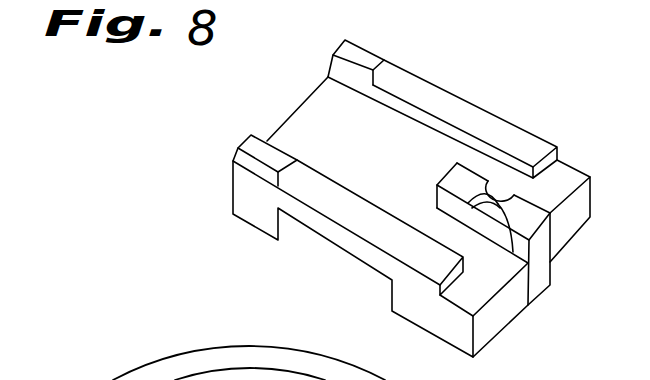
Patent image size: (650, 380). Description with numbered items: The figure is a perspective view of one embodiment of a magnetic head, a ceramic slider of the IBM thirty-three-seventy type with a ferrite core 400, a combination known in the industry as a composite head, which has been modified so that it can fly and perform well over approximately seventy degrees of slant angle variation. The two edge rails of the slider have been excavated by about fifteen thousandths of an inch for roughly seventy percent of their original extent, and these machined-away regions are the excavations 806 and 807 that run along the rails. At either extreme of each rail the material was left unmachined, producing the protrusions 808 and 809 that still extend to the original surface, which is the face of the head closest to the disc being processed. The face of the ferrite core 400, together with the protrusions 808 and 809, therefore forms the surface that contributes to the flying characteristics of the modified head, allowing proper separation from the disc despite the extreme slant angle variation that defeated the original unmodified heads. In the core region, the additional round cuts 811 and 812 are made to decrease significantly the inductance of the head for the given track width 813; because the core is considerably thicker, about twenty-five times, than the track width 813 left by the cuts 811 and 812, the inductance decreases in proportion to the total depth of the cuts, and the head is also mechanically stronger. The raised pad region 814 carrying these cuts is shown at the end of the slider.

The ferrite core 400 is at (541, 308).
The excavation 806 is at (514, 136).
The excavation 807 is at (381, 244).
The protrusion 808 is at (356, 52).
The protrusion 809 is at (246, 143).
The round cut 811 is at (505, 199).
The round cut 812 is at (490, 211).
The track width 813 is at (491, 198).
The raised pad 814 is at (447, 172).